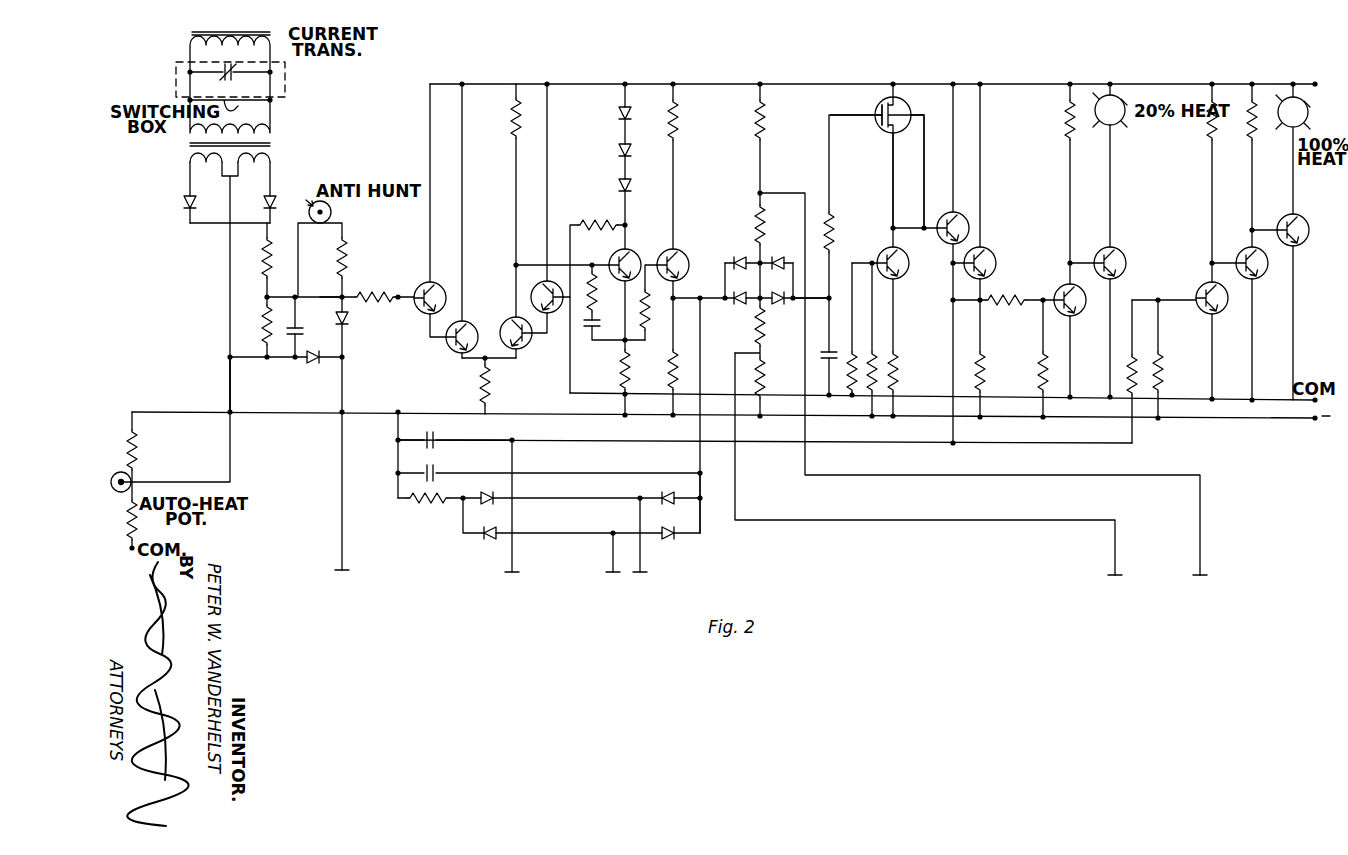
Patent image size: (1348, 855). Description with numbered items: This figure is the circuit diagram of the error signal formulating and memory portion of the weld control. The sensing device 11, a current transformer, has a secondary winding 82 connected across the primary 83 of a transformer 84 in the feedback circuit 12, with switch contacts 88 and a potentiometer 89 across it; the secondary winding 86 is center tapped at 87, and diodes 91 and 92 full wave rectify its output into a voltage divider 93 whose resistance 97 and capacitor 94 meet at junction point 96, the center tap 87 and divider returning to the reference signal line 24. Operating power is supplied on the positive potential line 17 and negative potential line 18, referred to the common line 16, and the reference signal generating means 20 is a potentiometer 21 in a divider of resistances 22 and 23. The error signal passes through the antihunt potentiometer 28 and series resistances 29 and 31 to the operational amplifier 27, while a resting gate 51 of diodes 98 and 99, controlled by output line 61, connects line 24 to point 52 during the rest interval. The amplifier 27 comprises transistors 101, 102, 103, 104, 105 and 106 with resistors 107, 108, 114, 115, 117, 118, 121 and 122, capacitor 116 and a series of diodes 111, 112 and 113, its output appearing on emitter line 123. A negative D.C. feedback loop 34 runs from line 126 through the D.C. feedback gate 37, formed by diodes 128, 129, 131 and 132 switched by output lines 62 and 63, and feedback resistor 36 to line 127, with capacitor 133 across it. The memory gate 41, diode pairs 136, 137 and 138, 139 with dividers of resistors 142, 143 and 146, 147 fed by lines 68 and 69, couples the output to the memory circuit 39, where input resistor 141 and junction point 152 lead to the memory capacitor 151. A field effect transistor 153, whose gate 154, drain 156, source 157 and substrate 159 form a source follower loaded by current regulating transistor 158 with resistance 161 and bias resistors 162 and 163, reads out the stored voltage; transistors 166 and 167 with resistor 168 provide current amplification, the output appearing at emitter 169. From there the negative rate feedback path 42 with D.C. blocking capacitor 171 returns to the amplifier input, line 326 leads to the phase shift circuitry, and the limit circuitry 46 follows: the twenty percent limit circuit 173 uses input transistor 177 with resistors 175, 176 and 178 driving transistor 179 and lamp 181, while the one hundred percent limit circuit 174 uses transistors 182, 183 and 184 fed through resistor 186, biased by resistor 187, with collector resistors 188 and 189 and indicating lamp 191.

The sensing device 11 is at (169, 31).
The feedback circuit 12 is at (303, 165).
The common line 16 is at (568, 393).
The positive potential line 17 is at (450, 80).
The negative potential line 18 is at (178, 409).
The reference signal generating means 20 is at (122, 404).
The potentiometer 21 is at (135, 481).
The resistance 22 is at (134, 445).
The resistance 23 is at (137, 526).
The reference signal line 24 is at (228, 386).
The operational amplifier 27 is at (523, 76).
The antihunt potentiometer 28 is at (332, 212).
The series resistance 29 is at (346, 256).
The series resistance 31 is at (388, 294).
The negative D.C. feedback loop 34 is at (409, 554).
The feedback resistor 36 is at (427, 505).
The D.C. feedback gate 37 is at (696, 544).
The memory circuit 39 is at (937, 76).
The memory gate 41 is at (757, 76).
The negative rate feedback path 42 is at (950, 442).
The limit circuitry 46 is at (1070, 76).
The resting gate circuit 51 is at (327, 383).
The point 52 is at (341, 297).
The output line 61 is at (343, 388).
The output line 62 is at (612, 558).
The output line 63 is at (642, 569).
The line 68 is at (738, 490).
The line 69 is at (801, 477).
The secondary winding 82 is at (190, 45).
The primary 83 is at (190, 133).
The transformer 84 is at (270, 147).
The secondary winding 86 is at (188, 161).
The center tap 87 is at (229, 181).
The switch contacts 88 is at (224, 78).
The potentiometer 89 is at (234, 110).
The diode 91 is at (183, 203).
The diode 92 is at (264, 206).
The voltage divider 93 is at (258, 254).
The capacitor 94 is at (297, 331).
The intermediate point 96 is at (264, 297).
The resistance 97 is at (264, 328).
The diode 98 is at (310, 364).
The diode 99 is at (348, 318).
The transistor 101 is at (422, 282).
The transistor 102 is at (446, 350).
The transistor 103 is at (522, 347).
The transistor 104 is at (530, 292).
The transistor 105 is at (627, 256).
The transistor 106 is at (678, 250).
The common resistor 107 is at (478, 388).
The resistor 108 is at (509, 120).
The diode 111 is at (617, 113).
The diode 112 is at (617, 150).
The diode 113 is at (617, 185).
The series resistor 114 is at (594, 290).
The resistance 115 is at (596, 223).
The capacitor 116 is at (596, 325).
The resistor 117 is at (649, 312).
The dropping resistor 118 is at (619, 385).
The resistor 121 is at (675, 110).
The resistor 122 is at (668, 385).
The emitter line 123 is at (700, 298).
The line 126 is at (698, 470).
The line 127 is at (396, 463).
The diode 128 is at (493, 496).
The diode 129 is at (666, 496).
The diode 131 is at (494, 543).
The diode 132 is at (682, 520).
The capacitor 133 is at (436, 476).
The diode 136 is at (741, 305).
The diode 137 is at (774, 306).
The diode 138 is at (738, 257).
The diode 139 is at (786, 250).
The input resistor 141 is at (834, 226).
The resistor 142 is at (754, 333).
The resistor 143 is at (768, 366).
The resistor 146 is at (758, 130).
The resistor 147 is at (758, 222).
The memory capacitor 151 is at (831, 351).
The junction point 152 is at (829, 298).
The field effect transistor 153 is at (880, 124).
The gate 154 is at (868, 112).
The drain 156 is at (904, 101).
The source 157 is at (893, 155).
The current regulating transistor 158 is at (886, 252).
The substrate 159 is at (923, 194).
The resistance 161 is at (897, 362).
The resistor 162 is at (852, 382).
The resistor 163 is at (873, 340).
The transistor 166 is at (943, 262).
The transistor 167 is at (996, 254).
The resistor 168 is at (984, 373).
The emitter 169 is at (985, 290).
The D.C. blocking capacitor 171 is at (436, 442).
The first limit circuit 173 is at (1066, 252).
The limit circuit 174 is at (1208, 252).
The resistance 175 is at (1039, 359).
The resistor 176 is at (992, 304).
The input transistor 177 is at (1079, 316).
The resistor 178 is at (1068, 126).
The transistor 179 is at (1127, 265).
The lamp 181 is at (1134, 112).
The transistor 182 is at (1199, 290).
The transistor 183 is at (1250, 244).
The transistor 184 is at (1297, 212).
The resistor 186 is at (1147, 371).
The resistor 187 is at (1160, 351).
The resistor 188 is at (1208, 136).
The resistor 189 is at (1250, 136).
The indicating lamp 191 is at (1308, 112).
The line 326 is at (513, 552).